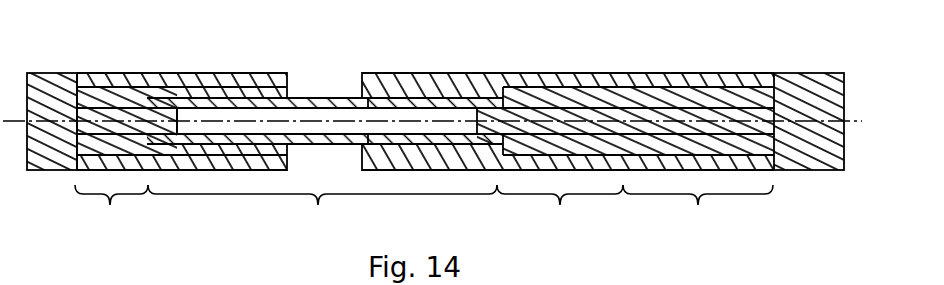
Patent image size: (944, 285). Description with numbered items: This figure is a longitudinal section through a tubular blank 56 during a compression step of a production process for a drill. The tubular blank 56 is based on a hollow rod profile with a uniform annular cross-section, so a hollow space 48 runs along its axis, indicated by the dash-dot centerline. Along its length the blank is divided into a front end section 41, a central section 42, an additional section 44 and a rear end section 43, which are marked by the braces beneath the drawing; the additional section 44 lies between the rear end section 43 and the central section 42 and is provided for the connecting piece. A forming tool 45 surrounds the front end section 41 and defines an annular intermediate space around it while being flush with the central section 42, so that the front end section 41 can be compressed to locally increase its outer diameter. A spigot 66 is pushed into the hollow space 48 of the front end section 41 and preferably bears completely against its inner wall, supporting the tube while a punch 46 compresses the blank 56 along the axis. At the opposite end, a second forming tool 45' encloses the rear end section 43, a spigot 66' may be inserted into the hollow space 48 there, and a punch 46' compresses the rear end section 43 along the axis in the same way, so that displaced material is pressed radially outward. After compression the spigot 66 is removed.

The front end section 41 is at (111, 212).
The central section 42 is at (322, 212).
The rear end section 43 is at (698, 212).
The additional section 44 is at (560, 212).
The forming tool 45 is at (182, 90).
The forming tool 45' is at (568, 88).
The punch 46 is at (53, 92).
The punch 46' is at (810, 91).
The hollow space 48 is at (263, 118).
The tubular blank 56 is at (300, 102).
The spigot 66 is at (127, 92).
The spigot 66' is at (625, 84).